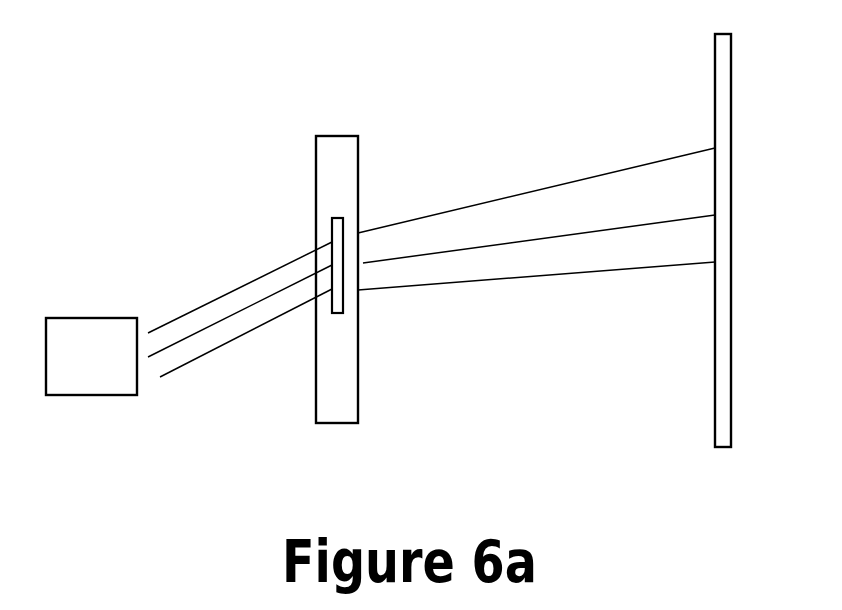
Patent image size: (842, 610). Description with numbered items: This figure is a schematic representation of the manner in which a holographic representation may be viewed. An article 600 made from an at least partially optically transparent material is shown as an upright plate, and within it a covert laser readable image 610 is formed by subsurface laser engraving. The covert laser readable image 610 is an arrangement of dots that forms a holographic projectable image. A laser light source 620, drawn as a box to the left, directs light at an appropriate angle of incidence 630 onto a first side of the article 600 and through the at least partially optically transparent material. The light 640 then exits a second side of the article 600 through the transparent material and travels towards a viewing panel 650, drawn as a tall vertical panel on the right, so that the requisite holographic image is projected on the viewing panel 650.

The plate with slit 600 is at (338, 134).
The covert laser readable (CLR) image 610 is at (340, 228).
The laser light source 620 is at (90, 375).
The angle of incidence 630 is at (220, 348).
The light 640 is at (510, 278).
The viewing panel 650 is at (733, 393).